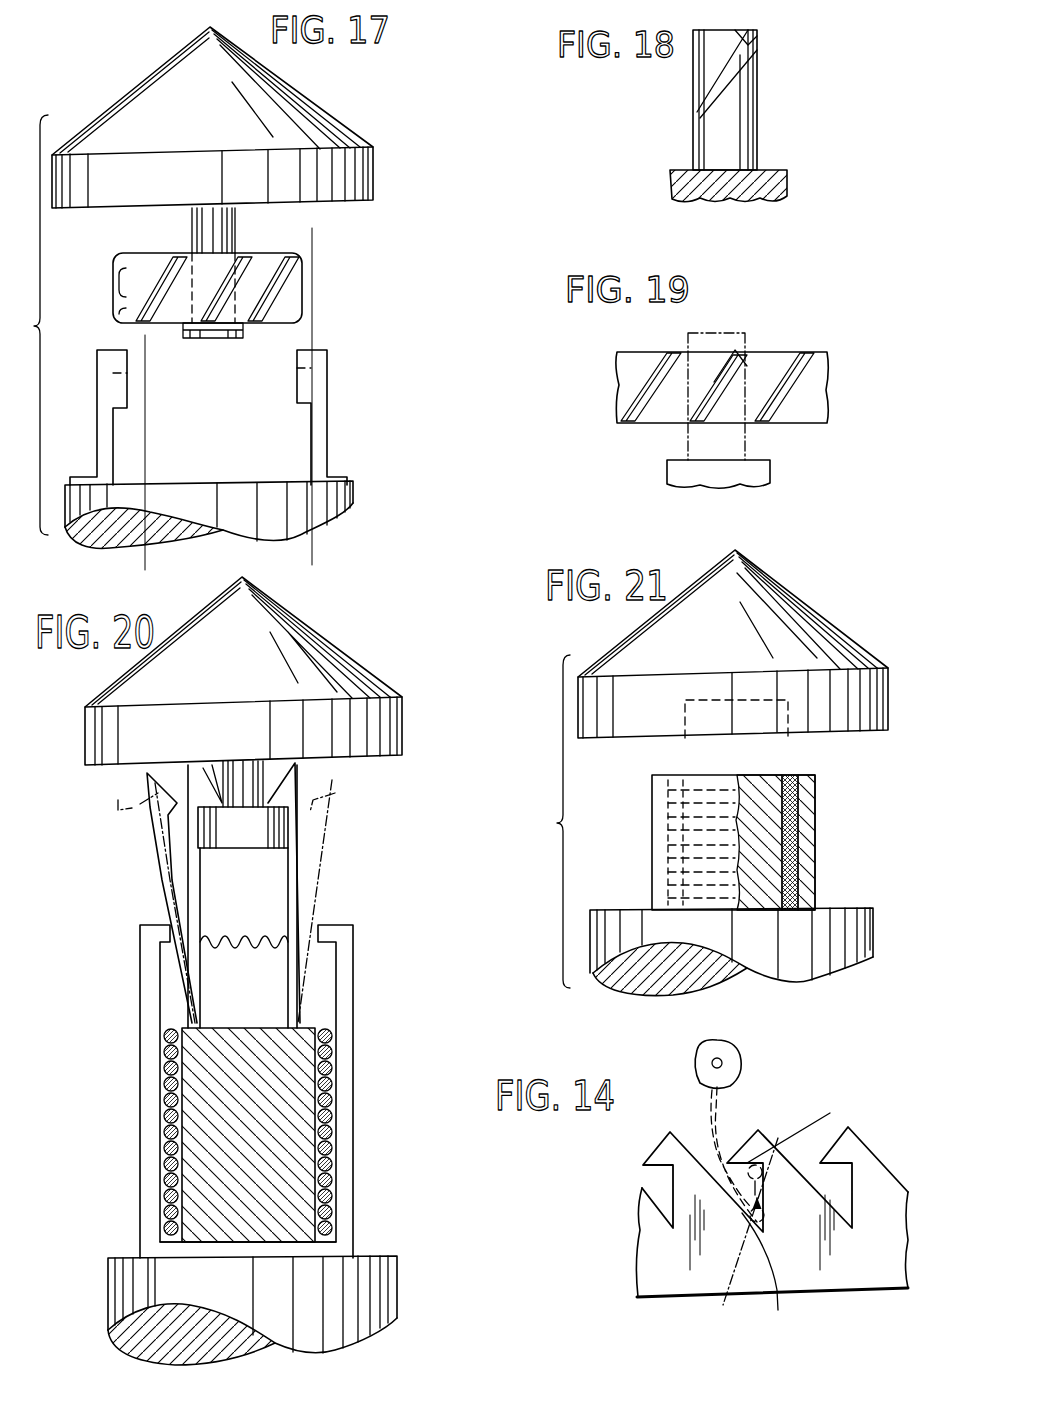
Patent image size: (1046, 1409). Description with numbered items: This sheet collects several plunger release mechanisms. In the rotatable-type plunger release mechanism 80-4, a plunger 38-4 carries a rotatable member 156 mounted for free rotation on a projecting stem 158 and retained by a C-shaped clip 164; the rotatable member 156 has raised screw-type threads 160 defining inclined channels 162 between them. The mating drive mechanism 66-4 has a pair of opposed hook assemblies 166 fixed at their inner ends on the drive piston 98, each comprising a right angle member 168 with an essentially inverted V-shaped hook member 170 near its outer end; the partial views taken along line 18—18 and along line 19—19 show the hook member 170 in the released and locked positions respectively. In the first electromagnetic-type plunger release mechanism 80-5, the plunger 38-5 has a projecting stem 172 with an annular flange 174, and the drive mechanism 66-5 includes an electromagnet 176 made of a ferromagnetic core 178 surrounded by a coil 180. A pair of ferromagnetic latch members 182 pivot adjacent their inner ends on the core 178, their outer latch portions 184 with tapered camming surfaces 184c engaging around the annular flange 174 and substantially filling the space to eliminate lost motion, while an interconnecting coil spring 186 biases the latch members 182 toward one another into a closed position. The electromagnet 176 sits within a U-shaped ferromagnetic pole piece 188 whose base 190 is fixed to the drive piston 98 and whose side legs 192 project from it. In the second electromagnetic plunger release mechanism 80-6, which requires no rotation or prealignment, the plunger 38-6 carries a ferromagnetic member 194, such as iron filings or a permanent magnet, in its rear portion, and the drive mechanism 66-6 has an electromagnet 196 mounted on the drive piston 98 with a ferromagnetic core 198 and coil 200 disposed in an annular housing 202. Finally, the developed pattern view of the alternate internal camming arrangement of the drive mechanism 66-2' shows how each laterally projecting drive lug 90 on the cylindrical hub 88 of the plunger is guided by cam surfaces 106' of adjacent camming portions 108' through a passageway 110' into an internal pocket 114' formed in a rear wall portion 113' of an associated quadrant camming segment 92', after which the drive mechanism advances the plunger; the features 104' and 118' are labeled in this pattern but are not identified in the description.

In FIG. 17, the plunger 38-4 is at (278, 88).
In FIG. 17, the rotatable-type plunger release mechanism 80-4 is at (259, 202).
In FIG. 17, the projecting stem 158 is at (203, 225).
In FIG. 17, the raised screw-type threads 160 is at (268, 272).
In FIG. 19, the raised screw-type threads 160 is at (660, 368).
In FIG. 17, the inclined channels 162 is at (165, 297).
In FIG. 19, the inclined channels 162 is at (742, 362).
In FIG. 17, the rotatable member 156 is at (207, 268).
In FIG. 17, the C-shaped clip 164 is at (240, 325).
In FIG. 17, the drive mechanism 66-4 is at (263, 449).
In FIG. 17, the hook assemblies 166 is at (254, 417).
In FIG. 18, the hook assemblies 166 is at (795, 100).
In FIG. 19, the hook assemblies 166 is at (709, 373).
In FIG. 17, the right angle member 168 is at (328, 452).
In FIG. 18, the right angle member 168 is at (738, 120).
In FIG. 19, the right angle member 168 is at (740, 432).
In FIG. 17, the hook member 170 is at (298, 396).
In FIG. 18, the hook member 170 is at (758, 44).
In FIG. 19, the hook member 170 is at (735, 340).
In FIG. 17, the drive piston 98 is at (356, 501).
In FIG. 18, the drive piston 98 is at (776, 183).
In FIG. 19, the drive piston 98 is at (765, 480).
In FIG. 20, the drive piston 98 is at (388, 1287).
In FIG. 21, the drive piston 98 is at (826, 963).
In FIG. 17, the section line 18— 18 is at (149, 565).
In FIG. 17, the section line 19— 19 is at (316, 562).
In FIG. 20, the plunger 38-5 is at (310, 645).
In FIG. 20, the electromagnetic-type plunger release mechanism 80-5 is at (281, 692).
In FIG. 20, the projecting stem 172 is at (257, 779).
In FIG. 20, the annular flange 174 is at (272, 828).
In FIG. 20, the electromagnet 176 is at (308, 927).
In FIG. 20, the ferromagnetic core 178 is at (300, 1140).
In FIG. 20, the coil 180 is at (327, 1160).
In FIG. 20, the latch members 182 is at (180, 856).
In FIG. 20, the outer latch portions 184 is at (386, 802).
In FIG. 20, the tapered camming surfaces 184c is at (238, 740).
In FIG. 20, the interconnecting coil spring 186 is at (250, 934).
In FIG. 20, the U-shaped pole piece 188 is at (140, 1025).
In FIG. 20, the base 190 is at (172, 1248).
In FIG. 20, the projecting side legs 192 is at (254, 1119).
In FIG. 20, the drive mechanism 66-5 is at (270, 991).
In FIG. 21, the plunger 38-6 is at (810, 625).
In FIG. 21, the plunger release mechanism 80-6 is at (739, 646).
In FIG. 21, the ferromagnetic member 194 is at (785, 740).
In FIG. 21, the drive mechanism 66-6 is at (757, 842).
In FIG. 21, the electromagnet 196 is at (753, 842).
In FIG. 21, the ferromagnetic core 198 is at (765, 887).
In FIG. 21, the coil 200 is at (790, 862).
In FIG. 21, the annular housing 202 is at (660, 846).
In FIG. 14, the cylindrical hub 88 is at (731, 1048).
In FIG. 14, the drive lugs 90 is at (711, 1062).
In FIG. 14, the channel 104' is at (694, 1143).
In FIG. 14, the cam surfaces 106' is at (723, 1106).
In FIG. 14, the camming portions 108' is at (746, 1179).
In FIG. 14, the passageway 110' is at (750, 1179).
In FIG. 14, the rear wall portion 113' is at (863, 1313).
In FIG. 14, the internal pocket 114' is at (775, 1276).
In FIG. 14, the tooth 118' is at (811, 1129).
In FIG. 14, the quadrant camming segment 92' is at (753, 1242).
In FIG. 14, the drive mechanism 66-2' is at (746, 1230).